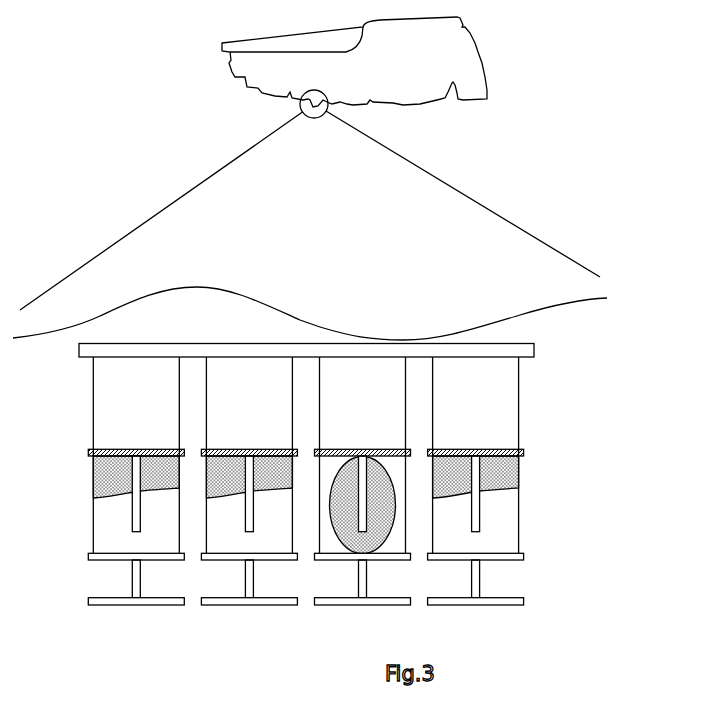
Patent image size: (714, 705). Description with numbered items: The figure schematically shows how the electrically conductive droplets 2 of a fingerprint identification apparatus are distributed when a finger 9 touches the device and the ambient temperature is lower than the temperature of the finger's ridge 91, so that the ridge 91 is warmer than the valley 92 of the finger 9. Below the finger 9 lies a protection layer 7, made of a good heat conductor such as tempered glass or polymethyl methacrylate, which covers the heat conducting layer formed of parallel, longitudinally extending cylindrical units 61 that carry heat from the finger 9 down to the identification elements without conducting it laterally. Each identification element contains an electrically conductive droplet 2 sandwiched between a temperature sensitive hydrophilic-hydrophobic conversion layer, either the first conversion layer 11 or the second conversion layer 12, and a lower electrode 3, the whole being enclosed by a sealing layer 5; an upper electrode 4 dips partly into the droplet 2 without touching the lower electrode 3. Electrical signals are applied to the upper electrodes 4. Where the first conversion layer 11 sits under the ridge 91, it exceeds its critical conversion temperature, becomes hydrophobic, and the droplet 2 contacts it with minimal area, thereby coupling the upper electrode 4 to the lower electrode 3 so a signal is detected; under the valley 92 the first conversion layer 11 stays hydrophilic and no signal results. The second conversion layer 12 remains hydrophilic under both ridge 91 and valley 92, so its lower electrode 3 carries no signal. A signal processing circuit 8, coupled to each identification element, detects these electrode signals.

The finger 9 is at (480, 53).
The valley of the finger 92 is at (166, 312).
The ridge of the finger 91 is at (463, 319).
The protection layer 7 is at (534, 350).
The cylindrical unit 61 is at (519, 406).
The first temperature sensitive hydrophilic-hydrophobic conversion layer 11 is at (358, 450).
The second temperature sensitive hydrophilic-hydrophobic conversion layer 12 is at (524, 452).
The electrically conductive droplet 2 is at (497, 473).
The upper electrode 4 is at (476, 505).
The sealing layer 5 is at (519, 534).
The lower electrode 3 is at (524, 557).
The signal processing circuit 8 is at (524, 600).